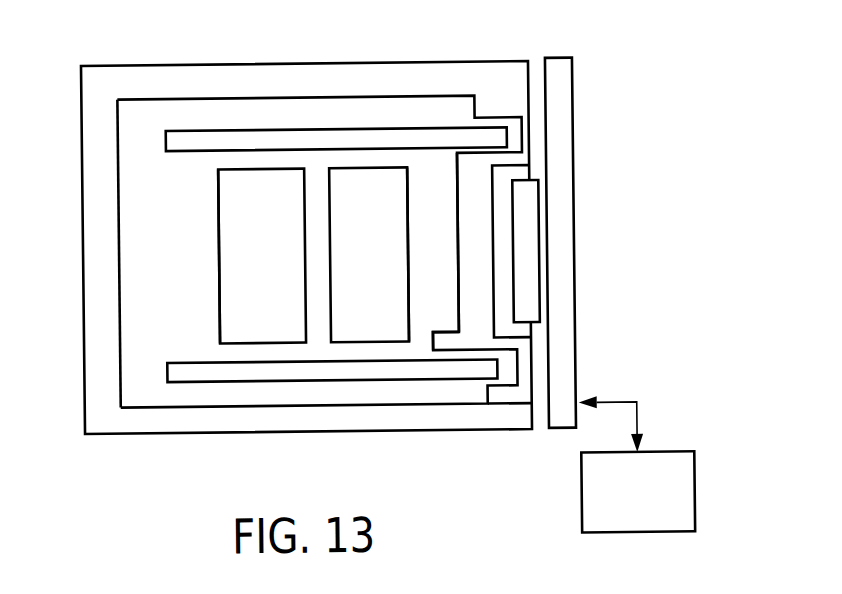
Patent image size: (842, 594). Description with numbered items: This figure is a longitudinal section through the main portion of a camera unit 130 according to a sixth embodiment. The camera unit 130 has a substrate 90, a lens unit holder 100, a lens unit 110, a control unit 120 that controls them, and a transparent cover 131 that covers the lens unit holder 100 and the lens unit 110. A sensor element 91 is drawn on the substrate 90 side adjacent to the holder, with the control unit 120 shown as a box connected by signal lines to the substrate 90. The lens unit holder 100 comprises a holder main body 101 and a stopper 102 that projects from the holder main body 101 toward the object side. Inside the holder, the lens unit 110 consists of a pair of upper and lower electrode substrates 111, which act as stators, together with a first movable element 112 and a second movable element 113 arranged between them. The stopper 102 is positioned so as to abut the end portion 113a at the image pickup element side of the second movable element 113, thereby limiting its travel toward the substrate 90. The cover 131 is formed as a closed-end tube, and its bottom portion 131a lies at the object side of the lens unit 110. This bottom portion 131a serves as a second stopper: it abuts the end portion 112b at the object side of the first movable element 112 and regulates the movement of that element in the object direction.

The substrate 90 is at (558, 63).
The sensor head 91 is at (527, 297).
The lens unit holder 100 is at (500, 106).
The holder main body 101 is at (479, 326).
The stopper 102 is at (440, 346).
The lens unit 110 is at (186, 377).
The electrode substrates 111 is at (165, 148).
The first movable element 112 is at (256, 170).
The end portion at the object side of the first movable element 112b is at (217, 244).
The second movable element 113 is at (351, 172).
The end portion at the image pickup element side of the second movable element 113a is at (410, 244).
The control unit 120 is at (729, 423).
The camera unit 130 is at (612, 201).
The transparent cover 131 is at (157, 74).
The bottom portion 131a is at (116, 269).